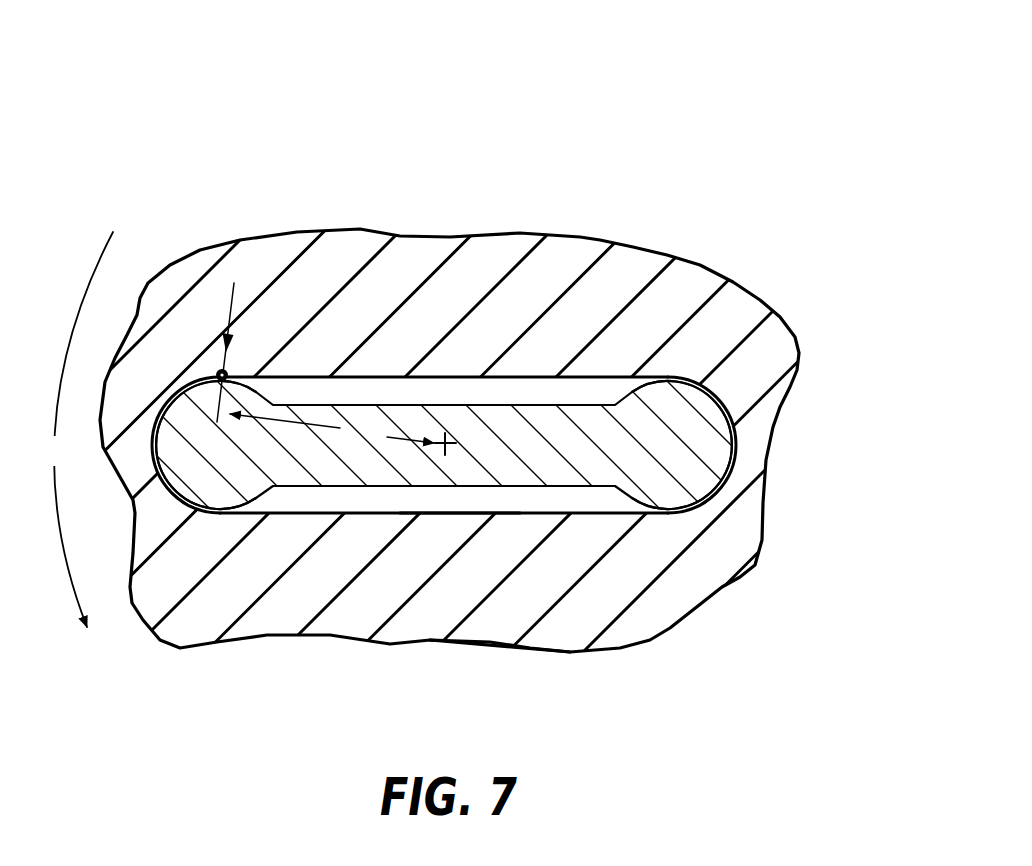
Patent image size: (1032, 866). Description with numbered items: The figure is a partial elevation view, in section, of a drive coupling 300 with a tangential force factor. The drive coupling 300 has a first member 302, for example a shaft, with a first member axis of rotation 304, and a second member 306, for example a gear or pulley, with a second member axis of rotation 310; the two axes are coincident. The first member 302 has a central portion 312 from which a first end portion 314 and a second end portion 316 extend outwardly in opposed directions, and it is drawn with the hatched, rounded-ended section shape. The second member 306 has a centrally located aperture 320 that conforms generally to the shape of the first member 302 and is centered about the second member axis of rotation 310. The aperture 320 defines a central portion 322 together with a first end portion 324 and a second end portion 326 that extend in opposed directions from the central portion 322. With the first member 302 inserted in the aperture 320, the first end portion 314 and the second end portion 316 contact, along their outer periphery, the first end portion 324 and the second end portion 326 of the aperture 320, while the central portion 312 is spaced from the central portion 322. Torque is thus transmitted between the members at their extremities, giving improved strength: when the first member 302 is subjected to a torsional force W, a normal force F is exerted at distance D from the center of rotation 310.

The drive coupling 300 is at (516, 433).
The first member 302 is at (464, 447).
The first member axis of rotation 304 is at (516, 433).
The second member 306 is at (707, 262).
The second member axis of rotation 310 is at (442, 440).
The central portion 312 is at (330, 482).
The first end portion 314 is at (225, 481).
The second end portion 316 is at (697, 438).
The aperture 320 is at (453, 505).
The central portion 322 is at (506, 616).
The first end portion 324 is at (184, 512).
The second end portion 326 is at (733, 478).